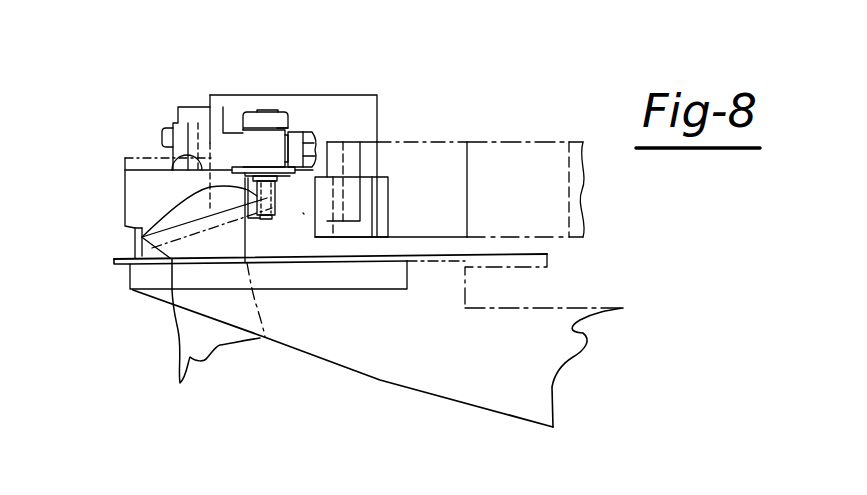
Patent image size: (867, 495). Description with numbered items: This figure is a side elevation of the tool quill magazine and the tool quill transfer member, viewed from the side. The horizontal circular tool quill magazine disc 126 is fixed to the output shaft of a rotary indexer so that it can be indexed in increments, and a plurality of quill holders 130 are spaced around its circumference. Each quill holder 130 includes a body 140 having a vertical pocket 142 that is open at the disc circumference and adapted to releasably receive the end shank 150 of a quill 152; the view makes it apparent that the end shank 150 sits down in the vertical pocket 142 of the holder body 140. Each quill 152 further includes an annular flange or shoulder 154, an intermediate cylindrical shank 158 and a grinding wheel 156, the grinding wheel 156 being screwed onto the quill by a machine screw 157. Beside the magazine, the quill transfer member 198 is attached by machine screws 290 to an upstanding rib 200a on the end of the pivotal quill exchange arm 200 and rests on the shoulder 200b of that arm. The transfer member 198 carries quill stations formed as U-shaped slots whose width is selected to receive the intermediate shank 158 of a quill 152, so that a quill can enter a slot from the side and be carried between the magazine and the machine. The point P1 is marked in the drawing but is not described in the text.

The tool quill magazine disc 126 is at (428, 152).
The quill holder 130 is at (316, 169).
The body 140 is at (303, 213).
The vertical pocket 142 is at (142, 237).
The end shank 150 is at (278, 190).
The quill 152 is at (292, 118).
The annular flange or shoulder 154 is at (330, 137).
The grinding wheel 156 is at (250, 115).
The machine screw 157 is at (272, 110).
The intermediate cylindrical shank 158 is at (302, 127).
The quill transfer member 198 is at (196, 112).
The pivotal quill exchange arm 200 is at (180, 330).
The upstanding rib 200a is at (178, 124).
The shoulder 200b is at (170, 172).
The machine screws 290 is at (160, 138).
The pivot point P1 is at (282, 183).